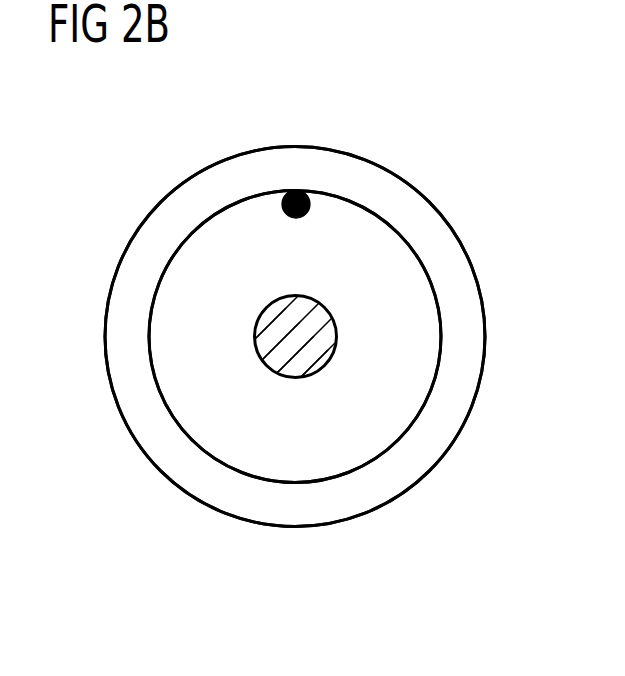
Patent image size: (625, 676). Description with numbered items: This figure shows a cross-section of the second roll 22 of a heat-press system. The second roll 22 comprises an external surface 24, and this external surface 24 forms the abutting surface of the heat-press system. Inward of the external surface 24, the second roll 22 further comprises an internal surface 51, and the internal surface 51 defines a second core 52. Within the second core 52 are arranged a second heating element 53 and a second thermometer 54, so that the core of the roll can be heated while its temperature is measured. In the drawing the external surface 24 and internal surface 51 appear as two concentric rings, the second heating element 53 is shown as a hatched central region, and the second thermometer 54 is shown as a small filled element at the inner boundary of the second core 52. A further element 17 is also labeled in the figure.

The second roll 22 is at (100, 151).
The external surface 24 is at (127, 424).
The internal surface 51 is at (148, 337).
The second core 52 is at (140, 281).
The second heating element 53 is at (315, 350).
The second thermometer 54 is at (296, 202).
The conductor 17 is at (337, 318).